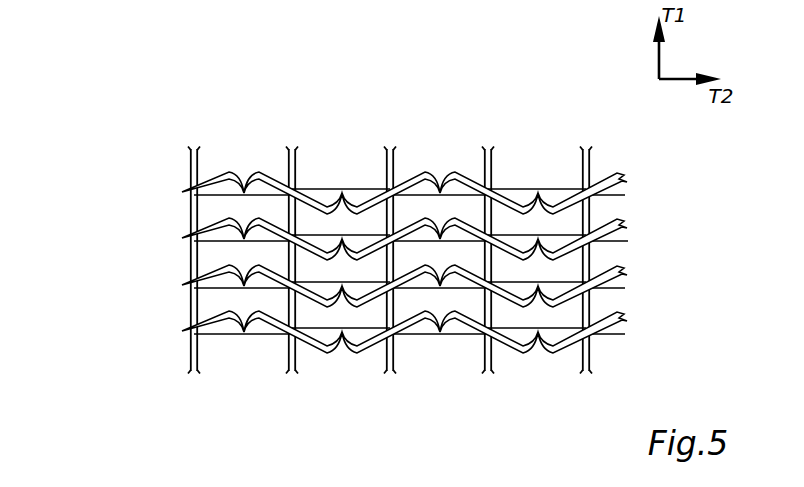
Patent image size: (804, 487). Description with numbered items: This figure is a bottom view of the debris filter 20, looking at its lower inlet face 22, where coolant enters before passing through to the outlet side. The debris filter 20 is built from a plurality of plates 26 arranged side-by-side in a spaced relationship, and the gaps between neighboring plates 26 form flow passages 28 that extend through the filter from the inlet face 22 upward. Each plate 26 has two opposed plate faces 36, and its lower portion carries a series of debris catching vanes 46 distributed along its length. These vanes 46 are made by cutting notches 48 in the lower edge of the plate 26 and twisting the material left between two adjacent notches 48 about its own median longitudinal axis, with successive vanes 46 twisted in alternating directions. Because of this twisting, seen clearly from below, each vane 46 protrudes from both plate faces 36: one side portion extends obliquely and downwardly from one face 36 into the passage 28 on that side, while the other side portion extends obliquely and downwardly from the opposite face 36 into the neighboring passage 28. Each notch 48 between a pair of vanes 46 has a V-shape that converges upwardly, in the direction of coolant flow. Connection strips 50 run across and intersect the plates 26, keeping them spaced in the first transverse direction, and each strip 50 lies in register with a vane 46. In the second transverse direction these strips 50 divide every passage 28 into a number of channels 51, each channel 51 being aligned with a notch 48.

The debris filter 20 is at (135, 368).
The lower inlet face 22 is at (186, 408).
The plate 26 is at (628, 183).
The flow passage 28 is at (190, 255).
The plate face 36 is at (518, 182).
The debris catching vane 46 is at (228, 332).
The notch 48 is at (257, 300).
The connection strip 50 is at (193, 147).
The channel 51 is at (310, 261).